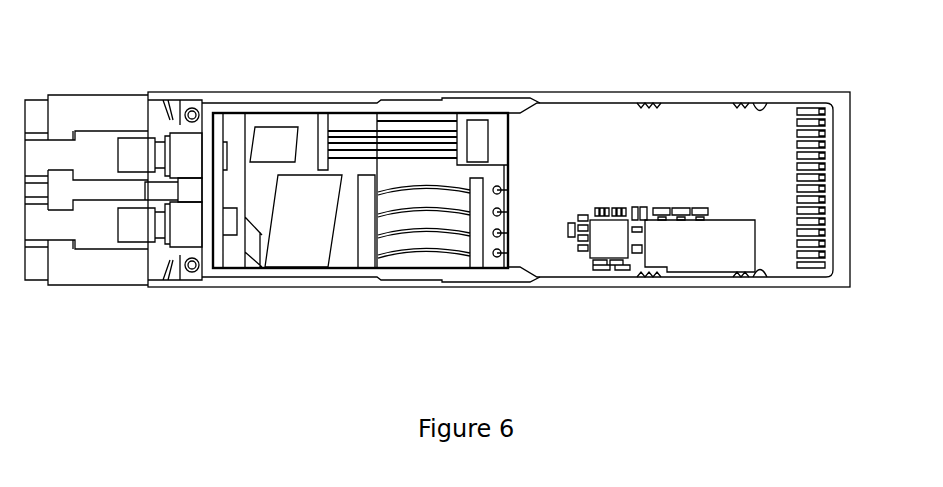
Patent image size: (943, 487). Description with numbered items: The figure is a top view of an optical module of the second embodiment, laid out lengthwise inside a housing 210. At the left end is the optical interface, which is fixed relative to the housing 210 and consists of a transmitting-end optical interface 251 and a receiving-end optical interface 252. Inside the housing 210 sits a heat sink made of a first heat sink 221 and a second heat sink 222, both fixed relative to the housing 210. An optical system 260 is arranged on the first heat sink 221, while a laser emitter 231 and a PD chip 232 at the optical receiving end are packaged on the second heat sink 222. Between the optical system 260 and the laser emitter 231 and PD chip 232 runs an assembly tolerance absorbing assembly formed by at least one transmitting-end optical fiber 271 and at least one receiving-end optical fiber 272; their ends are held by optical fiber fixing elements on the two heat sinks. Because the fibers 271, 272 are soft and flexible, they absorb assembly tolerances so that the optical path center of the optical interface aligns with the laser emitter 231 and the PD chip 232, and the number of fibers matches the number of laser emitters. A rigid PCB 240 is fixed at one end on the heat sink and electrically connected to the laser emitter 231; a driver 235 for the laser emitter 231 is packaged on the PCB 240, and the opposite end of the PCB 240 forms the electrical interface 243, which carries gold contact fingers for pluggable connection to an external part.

The housing 210 is at (774, 287).
The first heat sink 221 is at (288, 123).
The second heat sink 222 is at (490, 262).
The laser emitter 231 is at (505, 256).
The PD chip 232 is at (478, 142).
The driver 235 is at (618, 250).
The PCB 240 is at (578, 122).
The electrical interface 243 is at (815, 130).
The transmitting-end optical interface 251 is at (138, 225).
The receiving-end optical interface 252 is at (131, 152).
The optical system 260 is at (305, 233).
The transmitting-end optical fiber 271 is at (422, 250).
The receiving-end optical fiber 272 is at (413, 131).